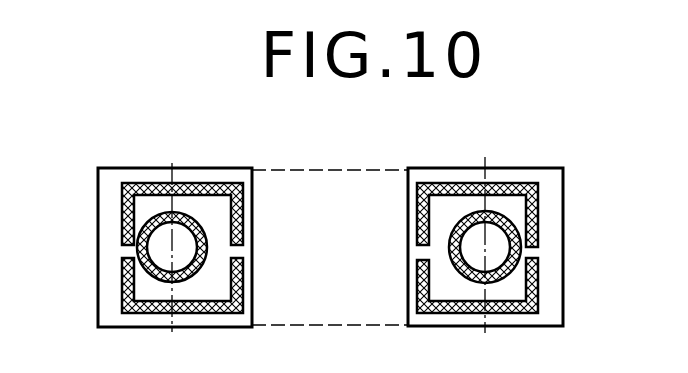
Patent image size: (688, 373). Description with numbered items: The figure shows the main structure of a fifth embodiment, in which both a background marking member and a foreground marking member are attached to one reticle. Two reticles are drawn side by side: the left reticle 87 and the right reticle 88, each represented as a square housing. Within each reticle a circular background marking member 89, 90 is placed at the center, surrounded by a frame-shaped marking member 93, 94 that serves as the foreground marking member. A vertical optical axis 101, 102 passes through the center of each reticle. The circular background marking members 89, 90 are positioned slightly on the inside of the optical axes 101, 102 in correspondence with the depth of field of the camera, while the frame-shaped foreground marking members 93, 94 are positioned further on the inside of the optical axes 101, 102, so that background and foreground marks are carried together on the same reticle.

The left reticle 87 is at (98, 173).
The right reticle 88 is at (563, 185).
The circular background marking member 89 is at (206, 262).
The circular background marking member 90 is at (519, 262).
The frame-shaped marking member 93 is at (122, 270).
The frame-shaped marking member 94 is at (410, 272).
The optical axis 101 is at (172, 228).
The optical axis 102 is at (488, 227).